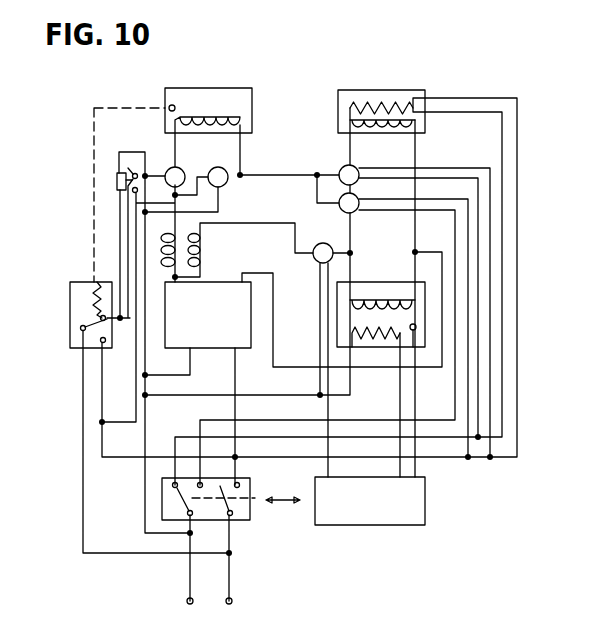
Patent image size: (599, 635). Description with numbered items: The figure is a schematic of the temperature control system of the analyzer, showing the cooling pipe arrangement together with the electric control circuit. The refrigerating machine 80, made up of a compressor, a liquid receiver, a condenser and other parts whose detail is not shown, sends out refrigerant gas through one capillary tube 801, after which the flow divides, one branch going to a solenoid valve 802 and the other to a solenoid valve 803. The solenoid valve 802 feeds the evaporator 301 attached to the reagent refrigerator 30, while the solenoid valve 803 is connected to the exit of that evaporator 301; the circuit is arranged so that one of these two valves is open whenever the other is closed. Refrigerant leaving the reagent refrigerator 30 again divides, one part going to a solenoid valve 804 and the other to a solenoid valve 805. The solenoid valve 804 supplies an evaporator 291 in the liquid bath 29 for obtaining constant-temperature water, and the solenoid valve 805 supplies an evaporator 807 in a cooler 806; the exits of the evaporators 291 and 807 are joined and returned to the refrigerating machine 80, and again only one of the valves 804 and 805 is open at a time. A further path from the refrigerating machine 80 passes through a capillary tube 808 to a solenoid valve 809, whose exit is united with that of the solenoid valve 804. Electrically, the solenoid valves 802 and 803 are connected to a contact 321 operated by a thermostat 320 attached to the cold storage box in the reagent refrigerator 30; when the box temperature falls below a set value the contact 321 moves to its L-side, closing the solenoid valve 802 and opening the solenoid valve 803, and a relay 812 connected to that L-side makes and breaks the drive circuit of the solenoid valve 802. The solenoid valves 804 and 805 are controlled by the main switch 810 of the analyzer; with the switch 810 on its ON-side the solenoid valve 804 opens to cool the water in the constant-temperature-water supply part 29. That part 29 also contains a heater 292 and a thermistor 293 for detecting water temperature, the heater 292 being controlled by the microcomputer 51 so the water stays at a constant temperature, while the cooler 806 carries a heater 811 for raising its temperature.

The reagent refrigerator 30 is at (230, 88).
The evaporator 301 is at (200, 115).
The thermostat 320 is at (170, 105).
The solenoid valve 802 is at (170, 167).
The solenoid valve 803 is at (226, 150).
The relay 812 is at (117, 182).
The capillary tube 801 is at (157, 250).
The capillary tube 808 is at (218, 257).
The contact 321 is at (70, 310).
The refrigerating machine 80 is at (251, 338).
The cooler 806 is at (352, 90).
The heater 811 is at (413, 104).
The evaporator 807 is at (338, 118).
The solenoid valve 805 is at (340, 168).
The solenoid valve 804 is at (339, 208).
The solenoid valve 809 is at (313, 257).
The liquid bath 29 is at (383, 282).
The evaporator 291 is at (352, 305).
The heater 292 is at (376, 341).
The thermistor 293 is at (417, 328).
The main switch 810 is at (240, 521).
The microcomputer 51 is at (390, 526).